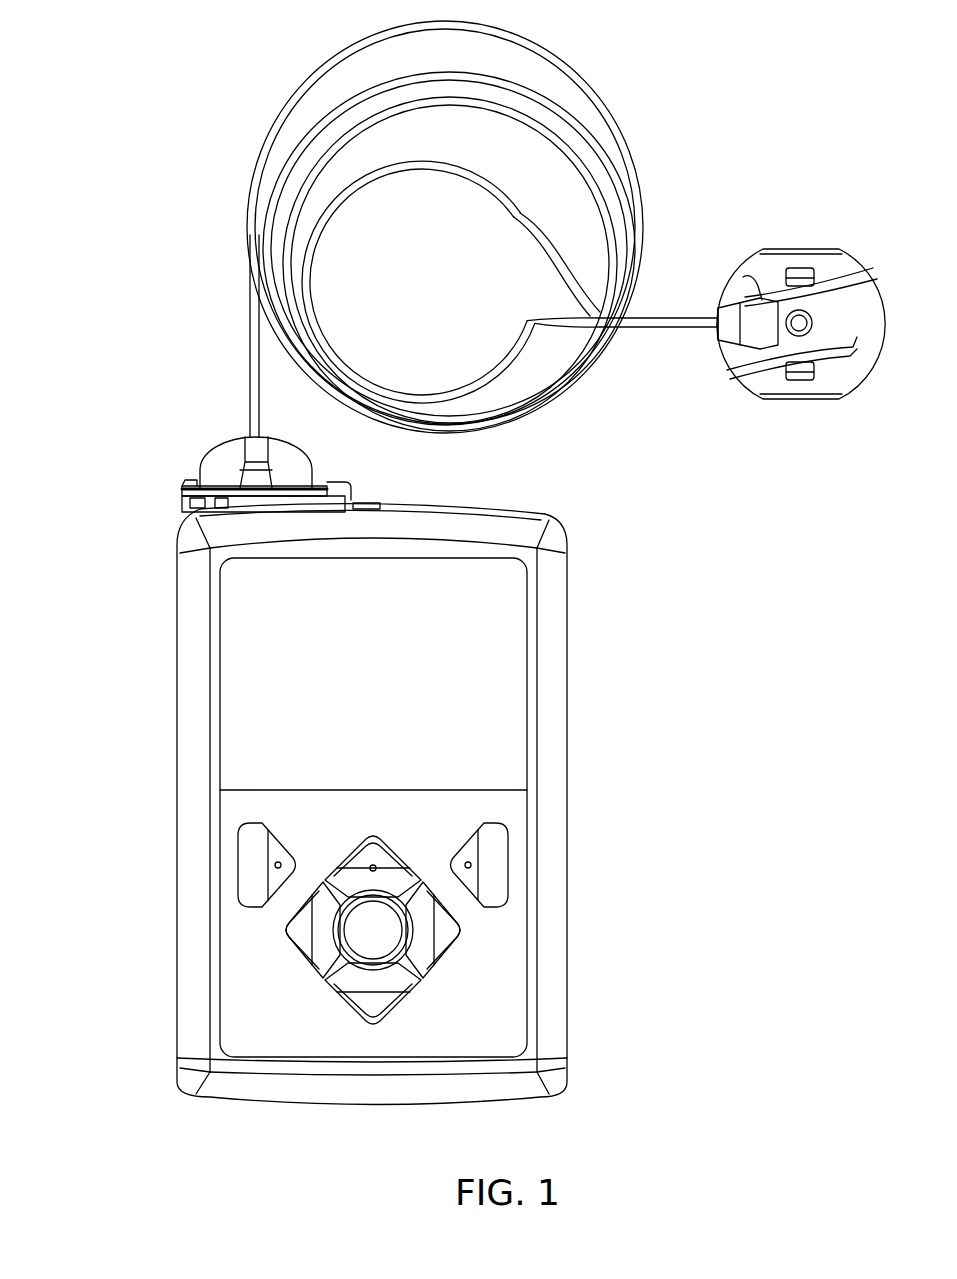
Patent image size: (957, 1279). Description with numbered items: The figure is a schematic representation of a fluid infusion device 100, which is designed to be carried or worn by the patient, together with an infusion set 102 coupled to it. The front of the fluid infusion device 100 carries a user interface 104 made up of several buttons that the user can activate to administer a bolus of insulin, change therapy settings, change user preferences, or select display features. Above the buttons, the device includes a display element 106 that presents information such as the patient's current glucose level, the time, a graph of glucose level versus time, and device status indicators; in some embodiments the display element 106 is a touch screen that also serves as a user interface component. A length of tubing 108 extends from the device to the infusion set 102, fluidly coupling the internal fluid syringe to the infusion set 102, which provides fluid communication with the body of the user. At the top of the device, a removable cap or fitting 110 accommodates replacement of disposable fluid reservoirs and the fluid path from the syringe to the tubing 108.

The fluid infusion device 100 is at (148, 679).
The infusion set 102 is at (805, 248).
The user interface 104 is at (513, 967).
The display element 106 is at (513, 668).
The tubing 108 is at (249, 252).
The removable cap or fitting 110 is at (224, 442).